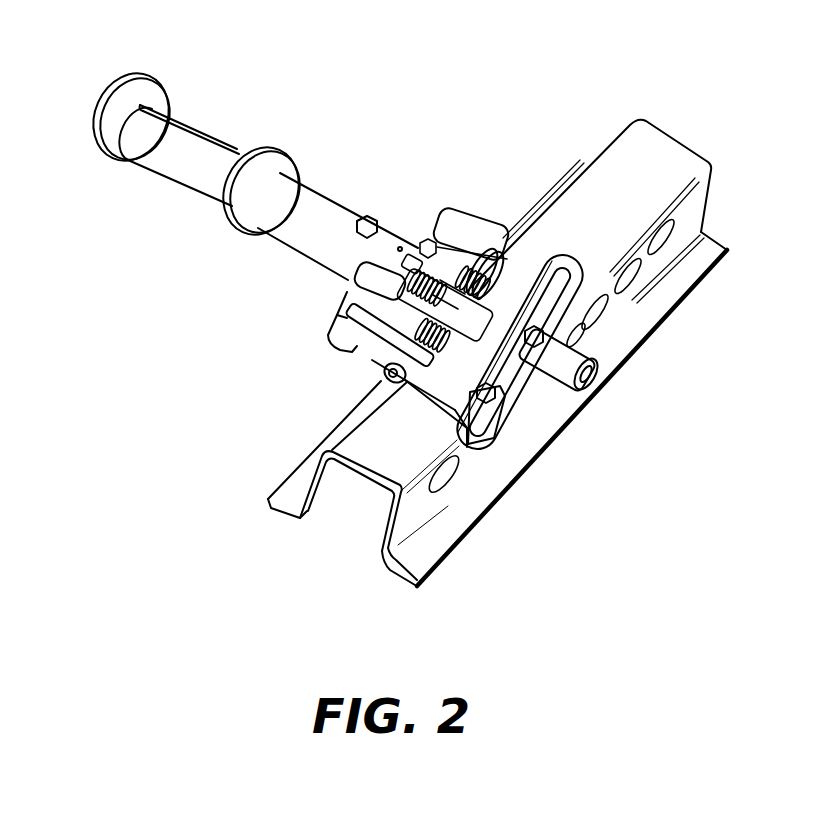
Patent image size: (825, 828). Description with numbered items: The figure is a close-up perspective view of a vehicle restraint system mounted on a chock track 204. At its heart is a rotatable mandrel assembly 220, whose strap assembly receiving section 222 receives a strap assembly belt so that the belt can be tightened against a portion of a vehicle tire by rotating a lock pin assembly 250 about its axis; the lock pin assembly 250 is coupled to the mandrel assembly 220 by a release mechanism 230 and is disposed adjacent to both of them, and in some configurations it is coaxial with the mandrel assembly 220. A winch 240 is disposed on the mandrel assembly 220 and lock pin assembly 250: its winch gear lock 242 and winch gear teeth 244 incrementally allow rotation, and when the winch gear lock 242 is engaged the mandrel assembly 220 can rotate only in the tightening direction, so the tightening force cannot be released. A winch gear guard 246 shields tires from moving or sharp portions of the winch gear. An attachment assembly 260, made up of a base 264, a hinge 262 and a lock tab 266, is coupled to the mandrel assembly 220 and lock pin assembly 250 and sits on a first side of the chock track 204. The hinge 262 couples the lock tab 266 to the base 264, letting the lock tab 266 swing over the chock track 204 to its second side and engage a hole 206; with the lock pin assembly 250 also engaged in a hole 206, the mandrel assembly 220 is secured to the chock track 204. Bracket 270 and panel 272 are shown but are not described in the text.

The chock track 204 is at (688, 225).
The hole 206 is at (658, 250).
The mandrel assembly 220 is at (208, 185).
The strap assembly receiving section 222 is at (166, 123).
The release mechanism 230 is at (357, 232).
The winch 240 is at (333, 322).
The winch gear lock 242 is at (335, 313).
The winch gear teeth 244 is at (418, 222).
The winch gear guard 246 is at (488, 218).
The lock pin assembly 250 is at (565, 380).
The attachment assembly 260 is at (508, 382).
The hinge 262 is at (331, 430).
The base 264 is at (363, 367).
The lock tab 266 is at (470, 448).
The mounting bracket 270 is at (733, 195).
The panel 272 is at (600, 116).